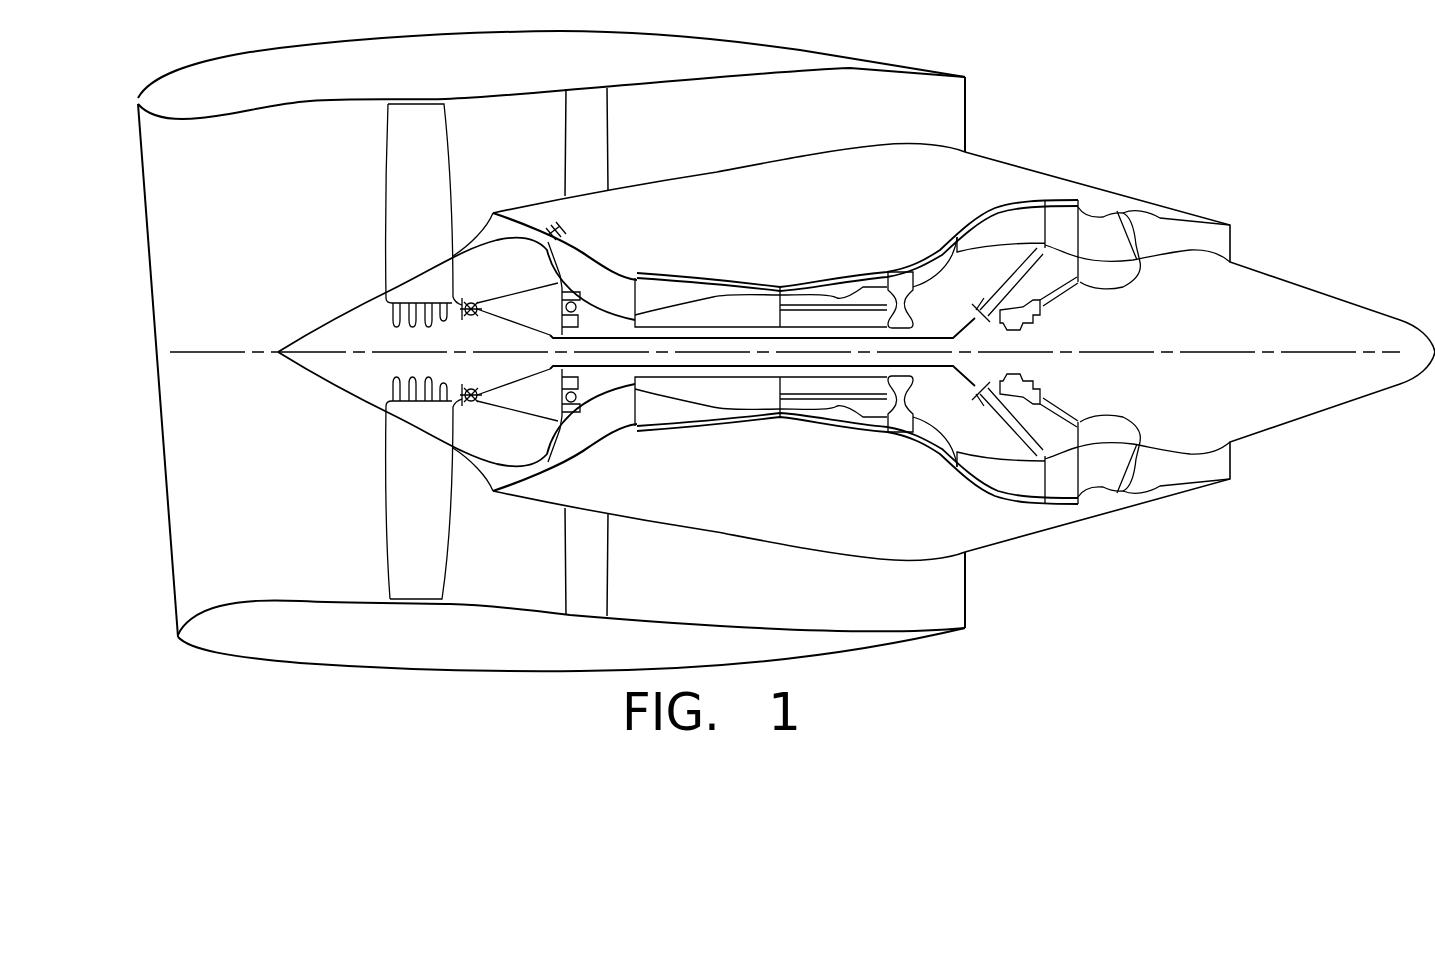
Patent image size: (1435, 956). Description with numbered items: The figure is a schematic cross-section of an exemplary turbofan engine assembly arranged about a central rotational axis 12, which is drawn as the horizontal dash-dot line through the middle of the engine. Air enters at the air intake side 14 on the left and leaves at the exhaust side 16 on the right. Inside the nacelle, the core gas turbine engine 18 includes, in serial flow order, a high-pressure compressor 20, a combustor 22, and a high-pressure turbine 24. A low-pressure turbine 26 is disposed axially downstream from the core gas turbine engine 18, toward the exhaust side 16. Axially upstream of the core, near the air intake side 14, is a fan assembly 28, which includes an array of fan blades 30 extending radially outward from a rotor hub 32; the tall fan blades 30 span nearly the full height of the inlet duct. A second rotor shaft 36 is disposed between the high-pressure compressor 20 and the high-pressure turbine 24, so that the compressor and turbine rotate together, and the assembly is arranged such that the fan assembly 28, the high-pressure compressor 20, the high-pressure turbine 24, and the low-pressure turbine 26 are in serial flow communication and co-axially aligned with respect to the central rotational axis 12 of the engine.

The central rotational axis 12 is at (247, 352).
The air intake side 14 is at (155, 156).
The exhaust side 16 is at (1016, 96).
The core gas turbine engine 18 is at (814, 190).
The high-pressure compressor 20 is at (657, 290).
The combustor 22 is at (853, 282).
The high-pressure turbine 24 is at (908, 278).
The low-pressure turbine 26 is at (1000, 222).
The fan assembly 28 is at (560, 233).
The fan blades 30 is at (415, 190).
The rotor hub 32 is at (423, 423).
The second rotor shaft 36 is at (820, 420).